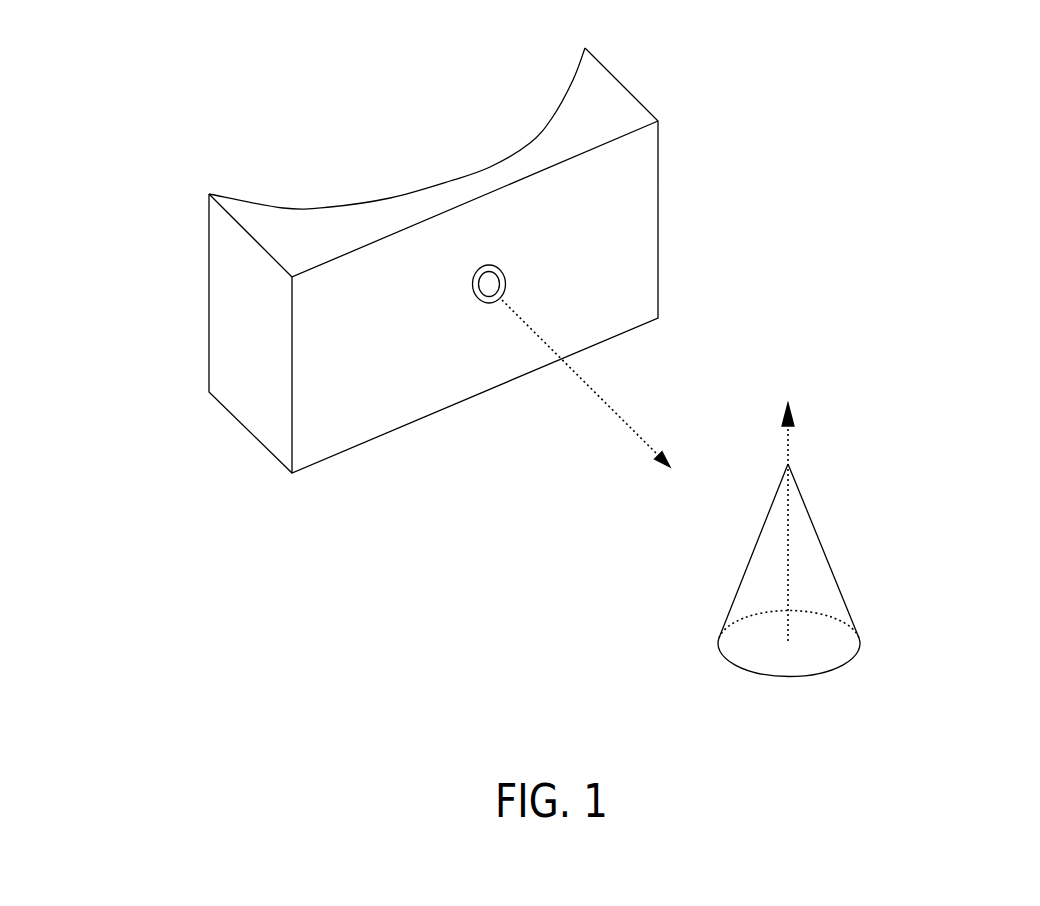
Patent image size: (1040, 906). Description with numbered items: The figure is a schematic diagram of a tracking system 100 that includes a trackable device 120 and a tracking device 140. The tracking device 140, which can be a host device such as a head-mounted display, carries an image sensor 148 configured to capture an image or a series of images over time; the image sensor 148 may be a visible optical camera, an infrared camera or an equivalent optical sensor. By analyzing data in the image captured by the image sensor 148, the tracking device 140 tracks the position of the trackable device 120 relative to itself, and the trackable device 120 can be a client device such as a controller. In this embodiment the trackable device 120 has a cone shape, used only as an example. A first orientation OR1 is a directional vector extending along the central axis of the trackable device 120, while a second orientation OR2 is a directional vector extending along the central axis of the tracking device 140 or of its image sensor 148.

The tracking system 100 is at (1020, 124).
The tracking device 140 is at (620, 82).
The image sensor 148 is at (483, 301).
The trackable device 120 is at (808, 513).
The first orientation OR1 is at (785, 440).
The second orientation OR2 is at (607, 403).